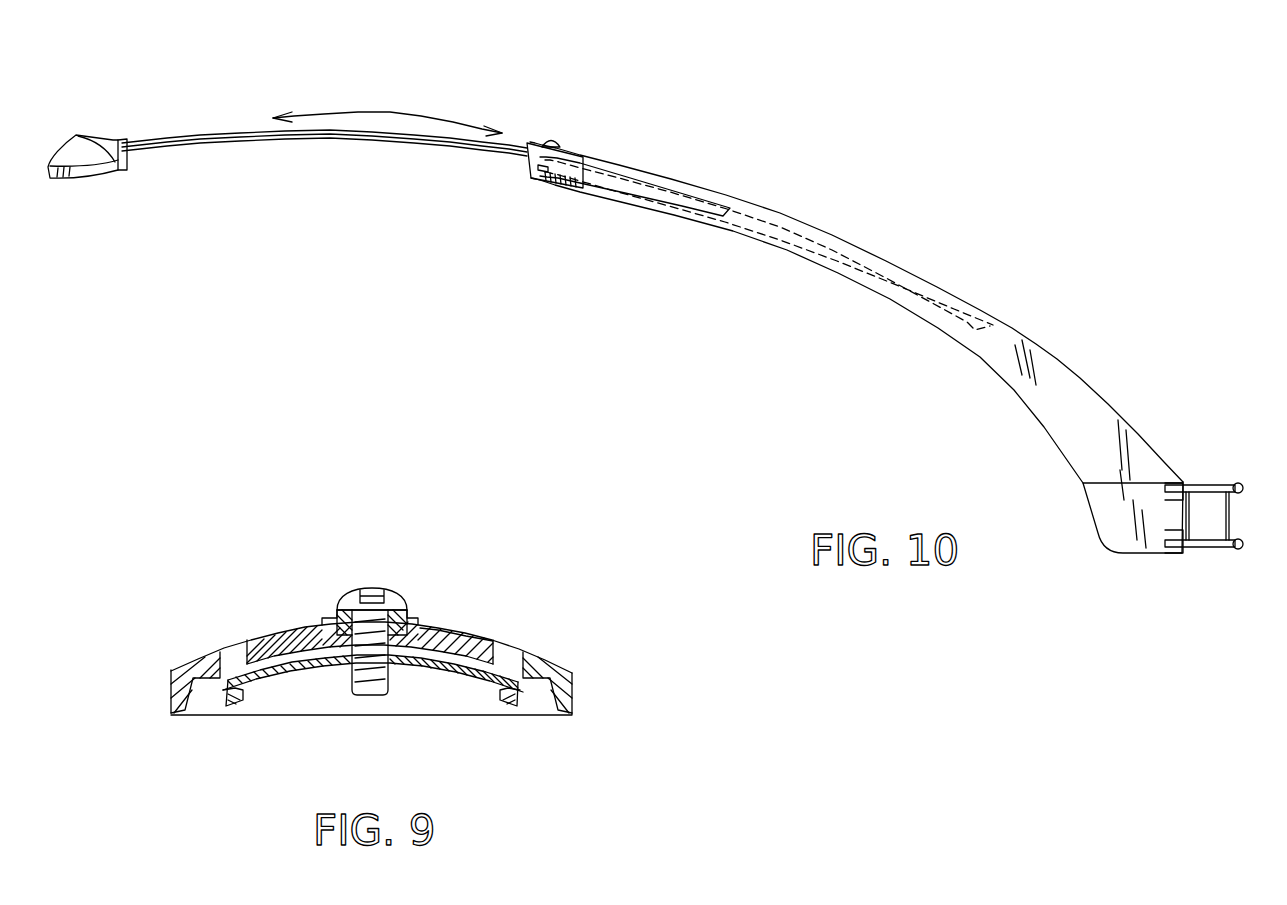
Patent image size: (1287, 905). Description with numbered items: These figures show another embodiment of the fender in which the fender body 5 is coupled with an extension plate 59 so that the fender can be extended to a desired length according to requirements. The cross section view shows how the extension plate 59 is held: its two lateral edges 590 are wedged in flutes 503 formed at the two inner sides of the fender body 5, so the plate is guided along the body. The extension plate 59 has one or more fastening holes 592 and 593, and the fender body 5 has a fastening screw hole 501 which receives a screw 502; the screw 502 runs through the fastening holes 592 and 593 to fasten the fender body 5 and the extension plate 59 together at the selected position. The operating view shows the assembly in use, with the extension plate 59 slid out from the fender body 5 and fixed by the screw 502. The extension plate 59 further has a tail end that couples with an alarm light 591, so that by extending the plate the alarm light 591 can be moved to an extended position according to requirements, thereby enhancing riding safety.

In FIG. 10, the fender body 5 is at (885, 307).
In FIG. 9, the fender body 5 is at (305, 628).
In FIG. 10, the extension plate 59 is at (279, 150).
In FIG. 9, the extension plate 59 is at (358, 656).
In FIG. 10, the alarm light 591 is at (72, 152).
In FIG. 10, the screw 502 is at (560, 140).
In FIG. 9, the screw 502 is at (398, 600).
In FIG. 9, the fastening screw hole 501 is at (403, 617).
In FIG. 9, the flutes 503 is at (222, 690).
In FIG. 9, the lateral edges 590 is at (537, 663).
In FIG. 9, the fastening hole 592 is at (435, 628).
In FIG. 9, the fastening hole 593 is at (532, 606).